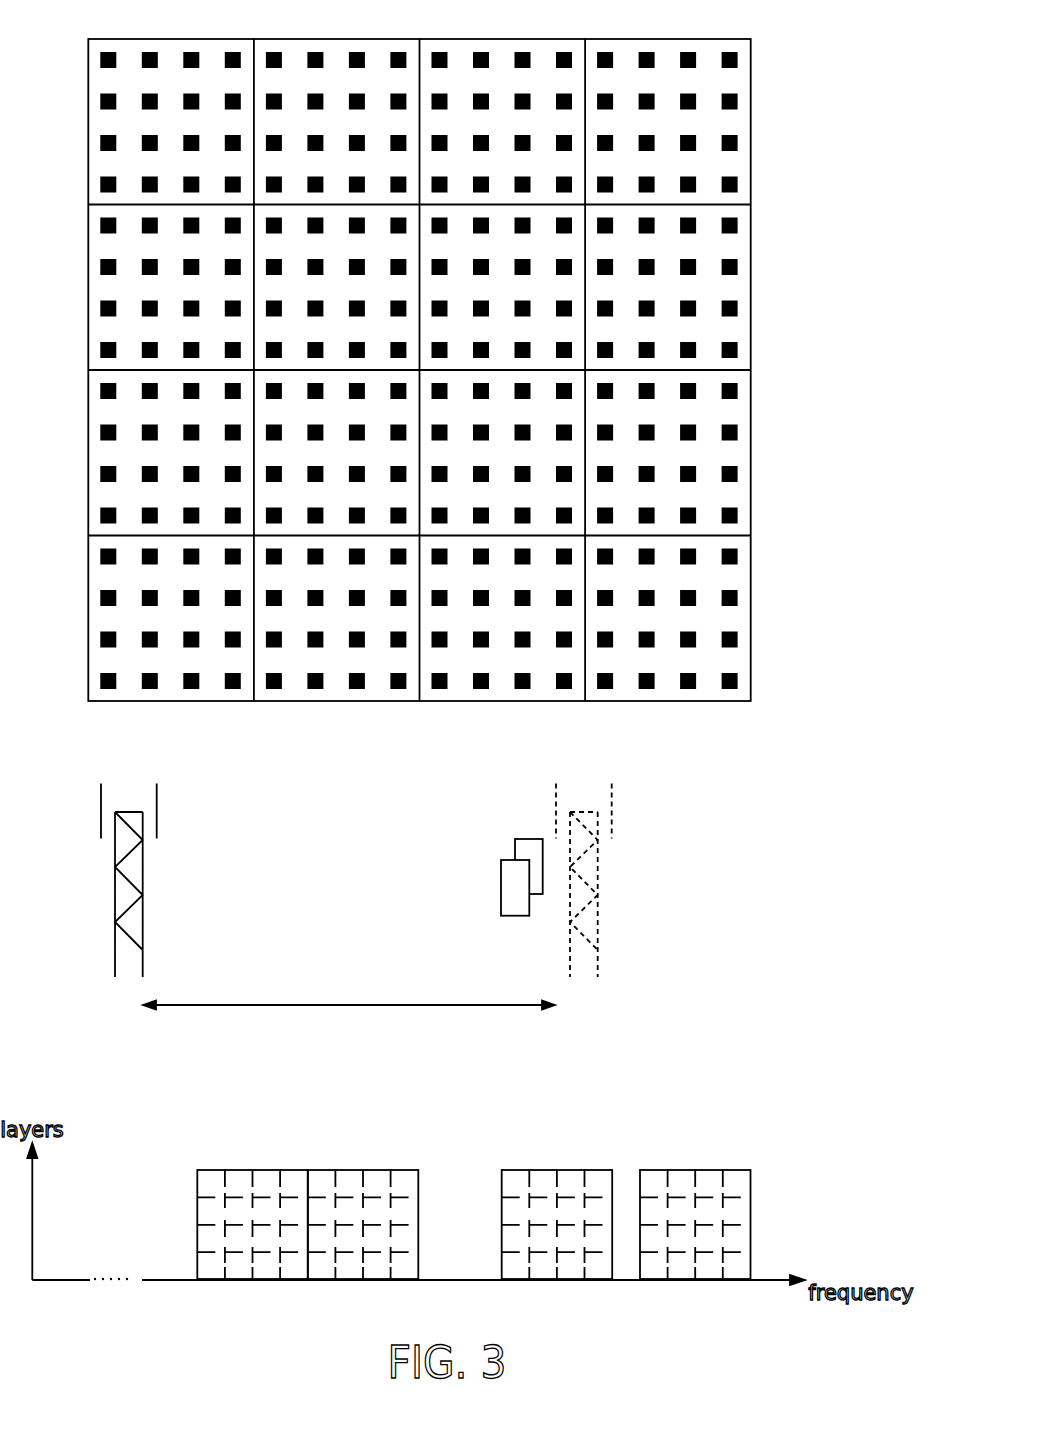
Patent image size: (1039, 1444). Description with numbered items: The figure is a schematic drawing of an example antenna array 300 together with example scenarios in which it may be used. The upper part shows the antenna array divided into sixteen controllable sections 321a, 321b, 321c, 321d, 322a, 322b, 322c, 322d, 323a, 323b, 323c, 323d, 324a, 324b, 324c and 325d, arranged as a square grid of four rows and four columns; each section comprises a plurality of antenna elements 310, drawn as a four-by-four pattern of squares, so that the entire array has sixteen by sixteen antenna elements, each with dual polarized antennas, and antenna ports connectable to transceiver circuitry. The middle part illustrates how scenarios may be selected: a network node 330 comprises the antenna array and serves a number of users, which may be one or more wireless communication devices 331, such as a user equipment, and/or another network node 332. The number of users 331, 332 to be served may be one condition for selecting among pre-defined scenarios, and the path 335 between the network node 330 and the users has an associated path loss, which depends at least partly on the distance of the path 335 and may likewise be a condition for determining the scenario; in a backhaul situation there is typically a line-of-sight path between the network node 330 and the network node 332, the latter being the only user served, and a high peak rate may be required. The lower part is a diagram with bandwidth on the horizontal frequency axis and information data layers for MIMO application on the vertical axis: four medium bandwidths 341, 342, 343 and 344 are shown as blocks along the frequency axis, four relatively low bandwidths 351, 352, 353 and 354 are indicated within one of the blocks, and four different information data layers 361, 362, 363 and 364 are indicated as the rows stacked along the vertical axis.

The antenna array 300 is at (802, 121).
The antenna elements 310 is at (100, 58).
The controllable section 321a is at (170, 122).
The controllable section 321b is at (336, 122).
The controllable section 321c is at (170, 288).
The controllable section 321d is at (336, 288).
The controllable section 322a is at (502, 122).
The controllable section 322b is at (667, 122).
The controllable section 322c is at (502, 288).
The controllable section 322d is at (667, 288).
The controllable section 323a is at (170, 453).
The controllable section 323b is at (336, 453).
The controllable section 323c is at (170, 619).
The controllable section 323d is at (336, 619).
The controllable section 324a is at (502, 453).
The controllable section 324b is at (667, 453).
The controllable section 324c is at (502, 619).
The antenna sub-array 325d is at (667, 619).
The network node 330 is at (115, 950).
The wireless communication devices 331 is at (501, 883).
The network node 332 is at (598, 950).
The path 335 is at (349, 994).
The medium bandwidth 341 is at (204, 1308).
The medium bandwidth 342 is at (314, 1308).
The medium bandwidth 343 is at (508, 1308).
The medium bandwidth 344 is at (646, 1308).
The low bandwidth 351 is at (323, 1170).
The low bandwidth 352 is at (350, 1170).
The low bandwidth 353 is at (377, 1170).
The low bandwidth 354 is at (405, 1170).
The information data layer 361 is at (197, 1266).
The information data layer 362 is at (197, 1238).
The information data layer 363 is at (197, 1210).
The information data layer 364 is at (197, 1182).